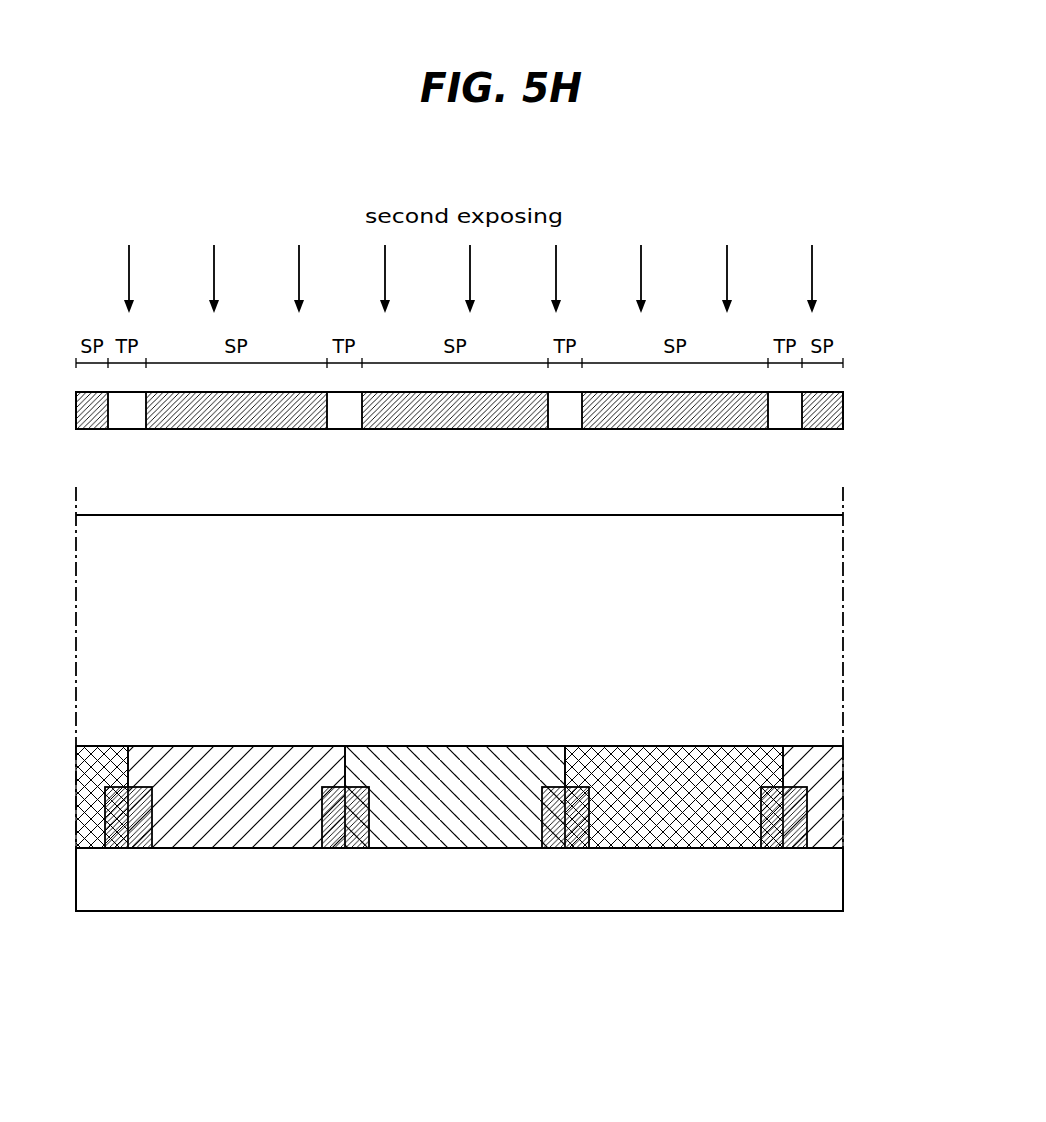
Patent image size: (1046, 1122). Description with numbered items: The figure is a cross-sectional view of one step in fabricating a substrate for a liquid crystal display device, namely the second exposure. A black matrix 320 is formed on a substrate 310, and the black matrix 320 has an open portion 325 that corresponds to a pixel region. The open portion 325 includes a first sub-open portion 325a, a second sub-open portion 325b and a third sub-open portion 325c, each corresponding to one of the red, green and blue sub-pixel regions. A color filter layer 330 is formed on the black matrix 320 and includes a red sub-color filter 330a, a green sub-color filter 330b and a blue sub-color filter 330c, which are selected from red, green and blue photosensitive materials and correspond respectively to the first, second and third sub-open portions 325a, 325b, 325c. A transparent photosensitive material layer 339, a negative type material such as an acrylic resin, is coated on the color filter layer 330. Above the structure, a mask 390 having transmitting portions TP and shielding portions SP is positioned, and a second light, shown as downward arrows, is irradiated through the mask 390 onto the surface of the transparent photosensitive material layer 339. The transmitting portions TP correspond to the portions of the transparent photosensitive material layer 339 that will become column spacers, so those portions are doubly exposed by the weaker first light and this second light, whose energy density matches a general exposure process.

The mask 390 is at (863, 407).
The transparent photosensitive material layer 339 is at (564, 520).
The color filter layer 330 is at (455, 716).
The red sub-color filter 330a is at (235, 755).
The green sub-color filter 330b is at (455, 755).
The blue sub-color filter 330c is at (671, 755).
The black matrix 320 is at (495, 806).
The substrate 310 is at (523, 892).
The open portion 325 is at (456, 907).
The first sub-open portion 325a is at (233, 848).
The second sub-open portion 325b is at (443, 848).
The third sub-open portion 325c is at (681, 848).